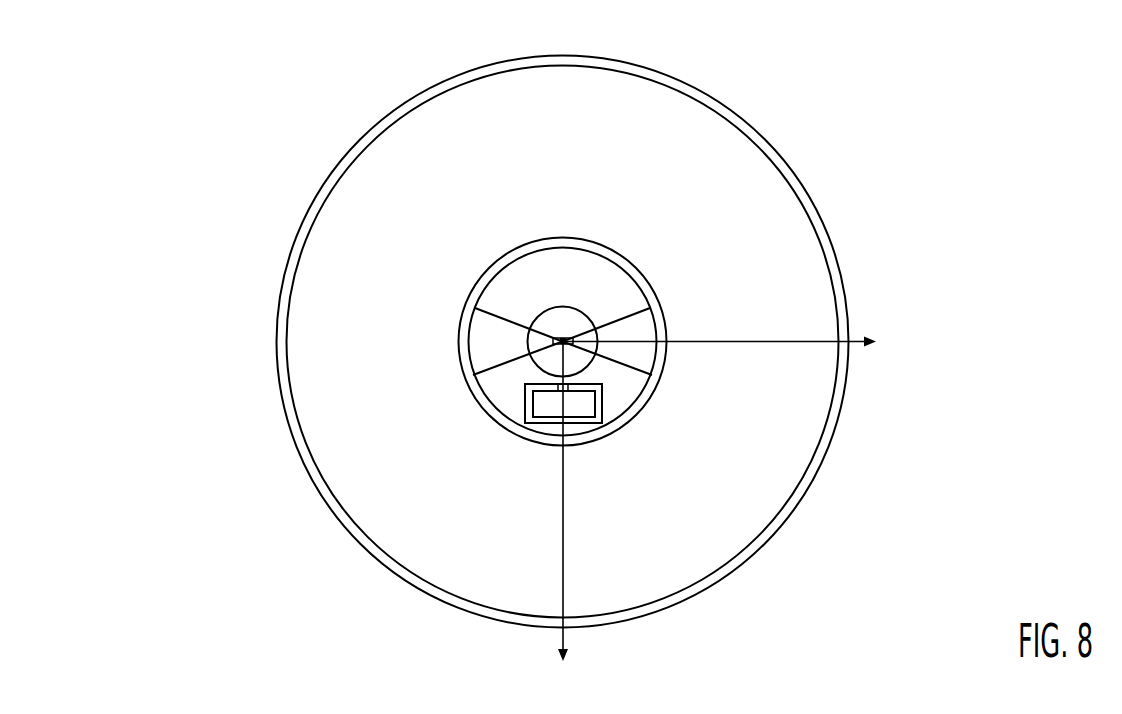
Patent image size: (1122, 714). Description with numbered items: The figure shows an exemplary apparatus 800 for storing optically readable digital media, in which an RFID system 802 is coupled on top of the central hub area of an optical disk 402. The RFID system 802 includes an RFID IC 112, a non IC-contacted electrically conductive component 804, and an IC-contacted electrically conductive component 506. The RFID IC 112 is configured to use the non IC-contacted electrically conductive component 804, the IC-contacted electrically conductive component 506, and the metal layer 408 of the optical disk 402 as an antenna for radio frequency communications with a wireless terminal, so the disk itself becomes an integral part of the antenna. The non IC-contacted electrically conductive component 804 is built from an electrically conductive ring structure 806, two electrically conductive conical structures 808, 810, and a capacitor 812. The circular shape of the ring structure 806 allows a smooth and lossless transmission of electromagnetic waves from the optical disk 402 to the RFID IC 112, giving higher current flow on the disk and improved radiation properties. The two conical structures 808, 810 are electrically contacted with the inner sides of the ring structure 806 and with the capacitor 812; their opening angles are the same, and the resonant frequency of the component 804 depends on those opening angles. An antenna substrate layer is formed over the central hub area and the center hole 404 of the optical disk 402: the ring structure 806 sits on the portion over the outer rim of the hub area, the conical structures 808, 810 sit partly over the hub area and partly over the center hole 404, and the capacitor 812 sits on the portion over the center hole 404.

The apparatus 800 is at (790, 83).
The optical disk 402 is at (783, 157).
The metal layer 408 is at (427, 127).
The center hole 404 is at (580, 322).
The RFID system 802 is at (451, 330).
The non IC-contacted electrically conductive component 804 is at (673, 381).
The electrically conductive ring structure 806 is at (460, 364).
The electrically conductive conical structure 808 is at (490, 372).
The electrically conductive conical structure 810 is at (635, 370).
The capacitor 812 is at (556, 338).
The IC-contacted electrically conductive component 506 is at (587, 428).
The RFID IC 112 is at (558, 392).